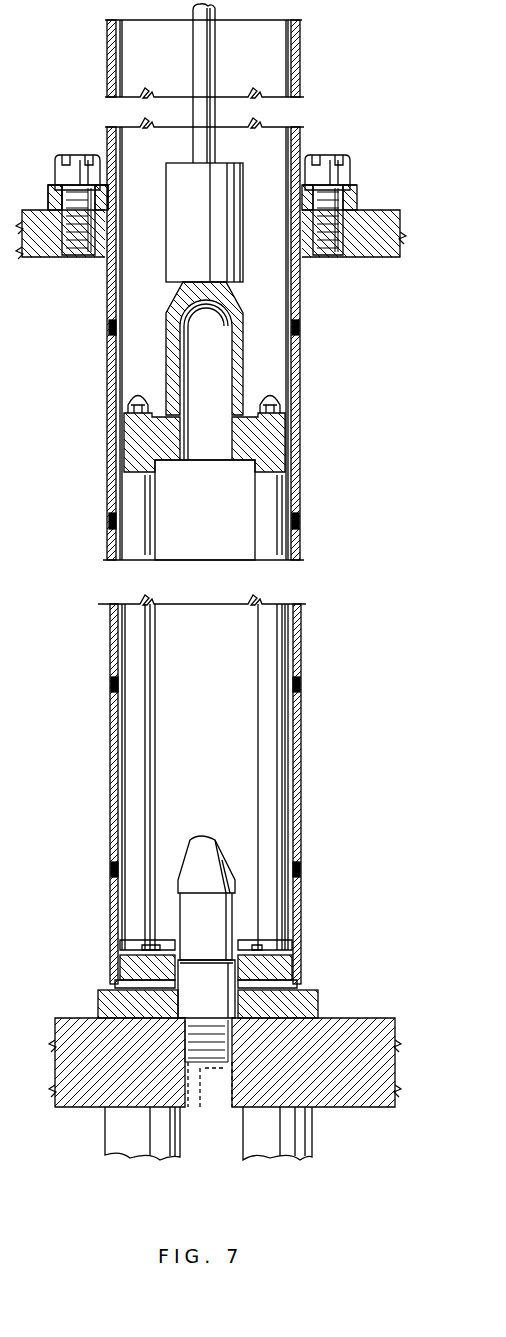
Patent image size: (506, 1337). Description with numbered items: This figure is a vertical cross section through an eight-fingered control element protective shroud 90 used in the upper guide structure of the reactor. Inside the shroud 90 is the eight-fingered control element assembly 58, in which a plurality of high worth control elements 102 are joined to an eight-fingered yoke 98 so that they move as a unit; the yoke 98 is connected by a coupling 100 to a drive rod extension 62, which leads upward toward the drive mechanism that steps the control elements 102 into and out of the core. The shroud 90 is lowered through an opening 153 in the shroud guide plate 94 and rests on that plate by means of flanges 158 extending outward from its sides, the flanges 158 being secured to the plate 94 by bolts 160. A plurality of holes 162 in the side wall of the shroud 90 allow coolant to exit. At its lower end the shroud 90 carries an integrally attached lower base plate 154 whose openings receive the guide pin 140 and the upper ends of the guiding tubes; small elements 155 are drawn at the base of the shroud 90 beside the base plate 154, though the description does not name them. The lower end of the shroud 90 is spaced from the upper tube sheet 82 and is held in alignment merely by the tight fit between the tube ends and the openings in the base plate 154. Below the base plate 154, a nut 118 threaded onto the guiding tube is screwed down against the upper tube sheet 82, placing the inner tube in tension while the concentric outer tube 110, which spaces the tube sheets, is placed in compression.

The 8-fingered control element assembly 58 is at (258, 366).
The drive rod extension 62 is at (215, 71).
The upper tube sheet 82 is at (85, 1100).
The 8-fingered control element protective shroud 90 is at (300, 648).
The shroud guide plate 94 is at (38, 222).
The 8-fingered yoke 98 is at (244, 396).
The coupling 100 is at (226, 176).
The control element 102 is at (155, 530).
The outer concentric tube 110 is at (296, 1135).
The nut 118 is at (110, 1008).
The guide pin 140 is at (212, 847).
The opening 153 is at (108, 257).
The lower base plate 154 is at (280, 966).
The retaining clip 155 is at (162, 930).
The flange 158 is at (55, 192).
The bolt 160 is at (68, 162).
The hole 162 is at (300, 342).